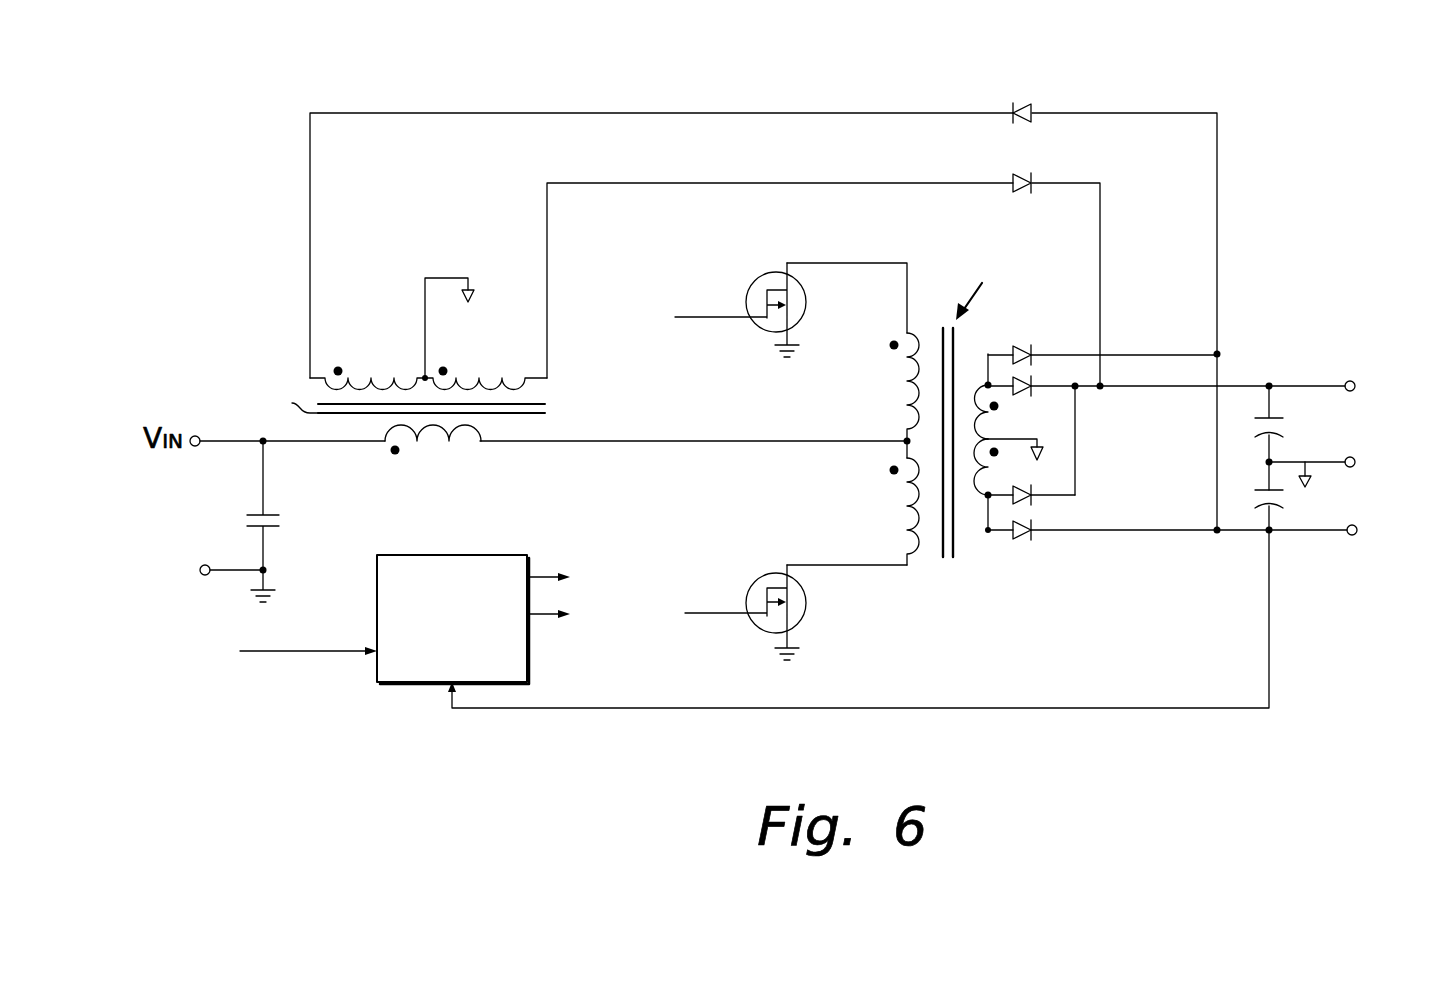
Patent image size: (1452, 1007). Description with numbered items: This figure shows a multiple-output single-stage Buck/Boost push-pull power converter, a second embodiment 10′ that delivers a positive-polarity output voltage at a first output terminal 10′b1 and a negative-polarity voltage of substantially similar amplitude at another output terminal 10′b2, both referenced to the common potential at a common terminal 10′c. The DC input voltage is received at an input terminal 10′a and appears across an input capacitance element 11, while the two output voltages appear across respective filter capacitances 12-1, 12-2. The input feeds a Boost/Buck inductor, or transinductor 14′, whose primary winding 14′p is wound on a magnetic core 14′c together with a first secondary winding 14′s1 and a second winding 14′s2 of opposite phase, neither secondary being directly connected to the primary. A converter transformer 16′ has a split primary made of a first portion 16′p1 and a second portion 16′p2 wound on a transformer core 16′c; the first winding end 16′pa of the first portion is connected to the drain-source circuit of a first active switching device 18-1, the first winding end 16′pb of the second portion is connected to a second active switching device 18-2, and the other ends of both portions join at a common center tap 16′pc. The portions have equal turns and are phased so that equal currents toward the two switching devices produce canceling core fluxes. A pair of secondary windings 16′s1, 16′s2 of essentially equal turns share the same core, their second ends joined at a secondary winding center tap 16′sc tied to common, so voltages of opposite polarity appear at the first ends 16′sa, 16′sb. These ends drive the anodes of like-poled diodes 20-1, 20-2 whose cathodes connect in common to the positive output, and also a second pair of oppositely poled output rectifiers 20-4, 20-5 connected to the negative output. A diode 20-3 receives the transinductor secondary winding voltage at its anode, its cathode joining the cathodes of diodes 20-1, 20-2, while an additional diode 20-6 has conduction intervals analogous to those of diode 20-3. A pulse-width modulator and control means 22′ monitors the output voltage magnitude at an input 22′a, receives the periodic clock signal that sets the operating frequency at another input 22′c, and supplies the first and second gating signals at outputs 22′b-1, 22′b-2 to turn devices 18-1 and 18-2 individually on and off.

The power converter 10′ is at (190, 166).
The input terminal 10′a is at (196, 435).
The common terminal 10′c is at (200, 569).
The first output terminal 10′b1 is at (1347, 378).
The output terminal 10′b2 is at (1348, 537).
The input capacitance element 11 is at (279, 522).
The filter capacitance 12-1 is at (1304, 437).
The filter capacitance 12-2 is at (1315, 512).
The transinductor 14′ is at (417, 393).
The magnetic core 14′c is at (281, 402).
The primary winding 14′p is at (480, 443).
The first secondary winding 14′s1 is at (369, 371).
The second winding 14′s2 is at (480, 376).
The converter transformer 16′ is at (956, 422).
The transformer core 16′c is at (945, 558).
The first winding end 16′pa is at (907, 266).
The first winding end 16′pb is at (848, 566).
The common center tap 16′pc is at (847, 444).
The first portion 16′p1 is at (862, 387).
The second portion 16′p2 is at (864, 511).
The first secondary winding first end 16′sa is at (988, 380).
The second secondary winding first end 16′sb is at (990, 500).
The secondary winding center tap 16′sc is at (975, 480).
The first secondary winding 16′s1 is at (991, 428).
The second secondary winding 16′s2 is at (988, 465).
The first active switching device 18-1 is at (798, 315).
The second active switching device 18-2 is at (790, 632).
The unidirectionally-conducting element 20-1 is at (1026, 386).
The unidirectionally-conducting element 20-2 is at (1027, 496).
The unidirectionally-conductive element 20-3 is at (1019, 180).
The output rectifier 20-4 is at (1022, 352).
The output rectifier 20-5 is at (1024, 538).
The additional diode 20-6 is at (1024, 102).
The pulse-width modulator and control means 22′ is at (454, 555).
The input 22′a is at (456, 686).
The first output 22′b-1 is at (528, 562).
The second output 22′b-2 is at (532, 614).
The input 22′c is at (315, 652).